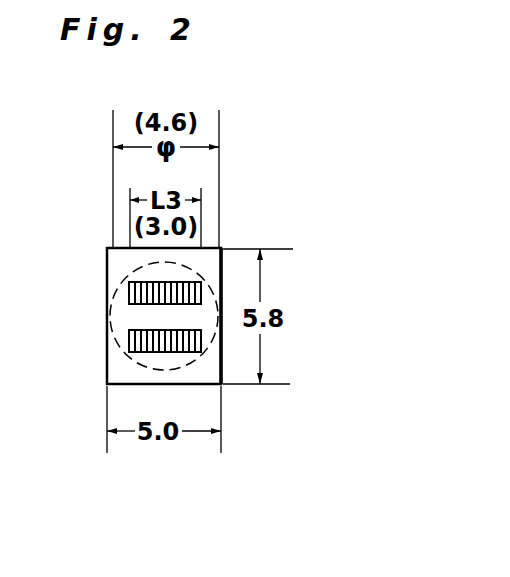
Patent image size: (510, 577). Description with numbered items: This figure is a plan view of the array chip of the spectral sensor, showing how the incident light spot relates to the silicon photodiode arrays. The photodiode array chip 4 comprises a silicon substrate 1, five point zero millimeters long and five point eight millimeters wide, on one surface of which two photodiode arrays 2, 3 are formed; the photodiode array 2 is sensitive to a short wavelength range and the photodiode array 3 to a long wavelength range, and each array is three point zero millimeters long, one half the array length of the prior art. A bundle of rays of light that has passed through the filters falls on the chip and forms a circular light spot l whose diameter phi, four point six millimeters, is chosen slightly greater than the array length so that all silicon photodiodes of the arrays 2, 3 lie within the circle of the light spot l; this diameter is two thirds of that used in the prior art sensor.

The silicon substrate 1 is at (115, 373).
The photodiode array 2 is at (128, 340).
The photodiode array 3 is at (128, 295).
The photodiode array chip 4 is at (224, 368).
The light spot l is at (203, 279).